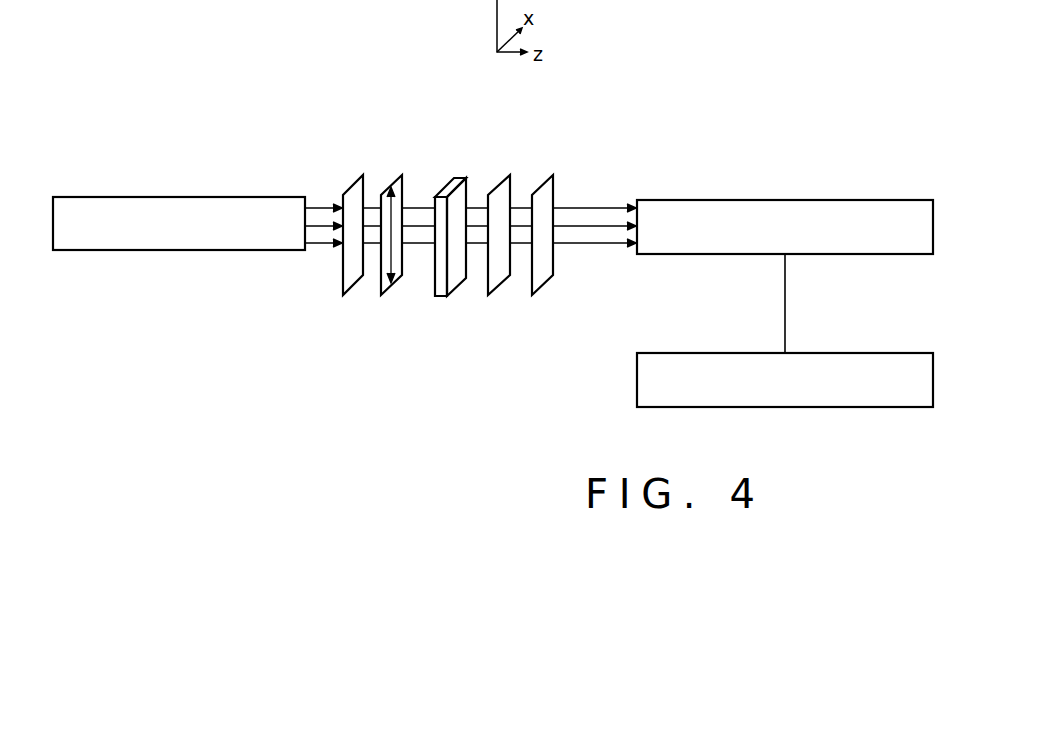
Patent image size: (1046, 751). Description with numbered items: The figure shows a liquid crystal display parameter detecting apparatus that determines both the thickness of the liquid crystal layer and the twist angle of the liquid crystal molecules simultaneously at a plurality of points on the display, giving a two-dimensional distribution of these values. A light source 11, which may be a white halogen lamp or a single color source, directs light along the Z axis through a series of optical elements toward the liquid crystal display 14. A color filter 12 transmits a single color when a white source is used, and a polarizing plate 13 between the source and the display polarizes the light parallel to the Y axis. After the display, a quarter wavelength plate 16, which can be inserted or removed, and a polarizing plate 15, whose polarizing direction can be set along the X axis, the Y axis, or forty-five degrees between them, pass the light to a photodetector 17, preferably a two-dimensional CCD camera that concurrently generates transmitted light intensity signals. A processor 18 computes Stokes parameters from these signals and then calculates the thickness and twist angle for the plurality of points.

The light source 11 is at (233, 197).
The color filter 12 is at (352, 190).
The polarizing plate (polarizer) 13 is at (385, 190).
The liquid crystal display 14 is at (443, 195).
The polarizing plate (polarizer) 15 is at (540, 187).
The quarter wavelength plate 16 is at (502, 183).
The photodetector 17 is at (723, 200).
The processor 18 is at (868, 355).